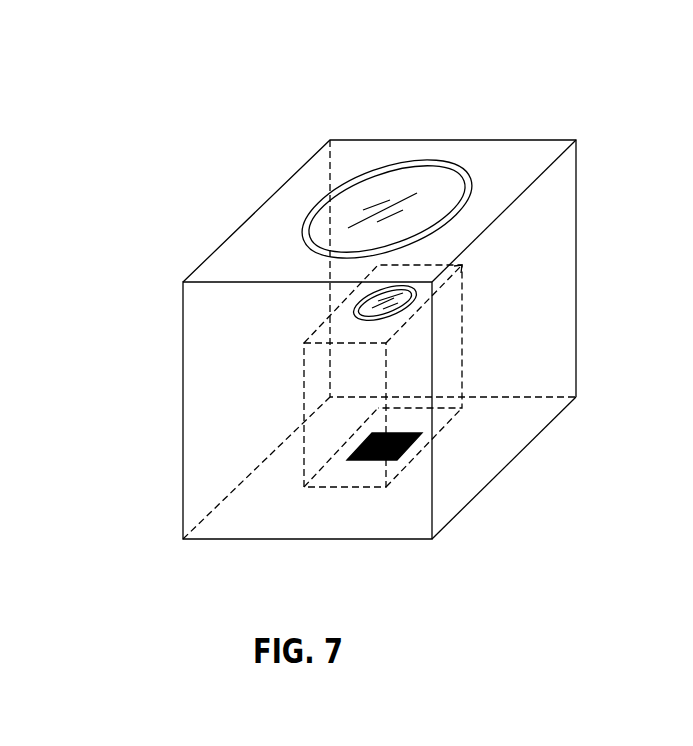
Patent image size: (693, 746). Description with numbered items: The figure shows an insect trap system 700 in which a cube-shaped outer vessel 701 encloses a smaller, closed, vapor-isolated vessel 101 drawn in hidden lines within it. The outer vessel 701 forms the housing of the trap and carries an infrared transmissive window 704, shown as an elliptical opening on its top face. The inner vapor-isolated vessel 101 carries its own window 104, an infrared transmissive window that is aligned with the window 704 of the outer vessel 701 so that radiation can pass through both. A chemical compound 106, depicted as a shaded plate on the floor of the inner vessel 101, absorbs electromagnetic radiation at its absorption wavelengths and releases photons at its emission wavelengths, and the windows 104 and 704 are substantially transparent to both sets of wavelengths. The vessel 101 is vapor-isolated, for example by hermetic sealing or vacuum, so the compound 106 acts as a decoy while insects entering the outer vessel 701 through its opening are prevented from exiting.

The apparatus 700 is at (222, 101).
The housing 701 is at (183, 347).
The top circular opening 704 is at (395, 185).
The window 104 is at (417, 304).
The vapor-isolated vessel 101 is at (463, 324).
The chemical compound 106 is at (407, 447).